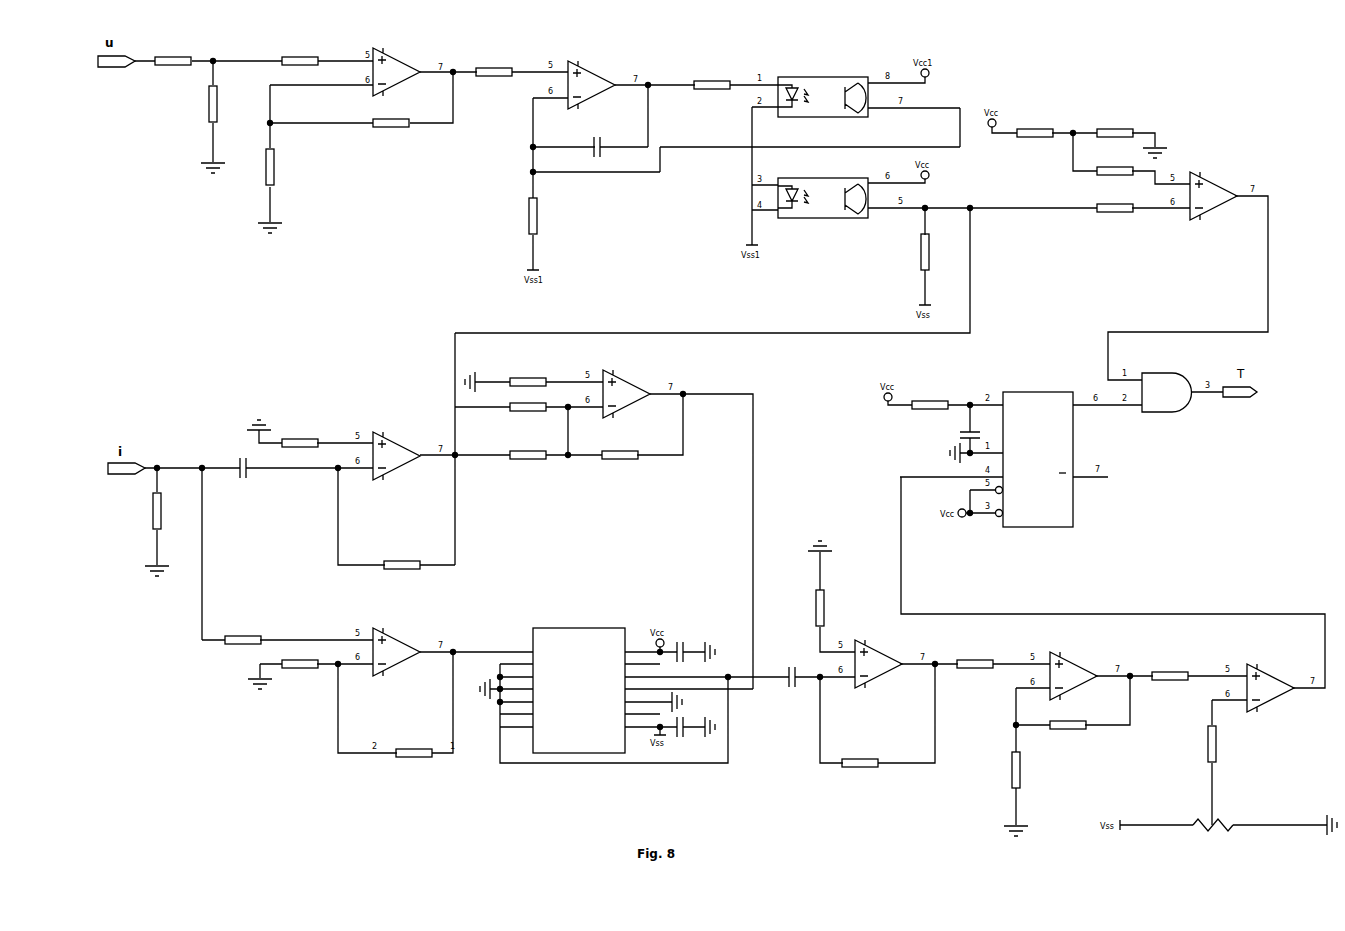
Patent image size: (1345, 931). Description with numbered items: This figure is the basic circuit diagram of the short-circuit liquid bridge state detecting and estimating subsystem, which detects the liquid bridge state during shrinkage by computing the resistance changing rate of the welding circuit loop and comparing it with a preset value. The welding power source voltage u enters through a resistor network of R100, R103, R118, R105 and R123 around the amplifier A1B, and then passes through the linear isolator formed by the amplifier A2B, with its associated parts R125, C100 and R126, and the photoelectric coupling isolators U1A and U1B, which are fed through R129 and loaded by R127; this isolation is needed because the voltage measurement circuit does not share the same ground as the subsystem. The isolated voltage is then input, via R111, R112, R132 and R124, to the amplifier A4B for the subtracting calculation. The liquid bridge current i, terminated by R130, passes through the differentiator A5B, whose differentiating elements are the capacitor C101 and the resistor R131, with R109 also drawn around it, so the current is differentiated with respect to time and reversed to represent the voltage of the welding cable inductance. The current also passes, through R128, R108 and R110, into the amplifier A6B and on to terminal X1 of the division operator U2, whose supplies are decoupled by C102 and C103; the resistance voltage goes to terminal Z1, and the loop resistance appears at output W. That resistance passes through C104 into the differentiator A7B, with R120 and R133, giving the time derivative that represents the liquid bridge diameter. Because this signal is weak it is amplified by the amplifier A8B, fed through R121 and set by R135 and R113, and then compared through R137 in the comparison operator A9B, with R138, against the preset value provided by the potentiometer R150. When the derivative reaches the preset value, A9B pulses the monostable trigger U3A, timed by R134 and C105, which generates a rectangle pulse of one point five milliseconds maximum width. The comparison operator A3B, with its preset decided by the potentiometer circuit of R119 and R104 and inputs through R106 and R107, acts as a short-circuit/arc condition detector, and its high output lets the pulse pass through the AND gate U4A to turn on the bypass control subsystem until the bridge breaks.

The resistor 27K R100 is at (173, 63).
The resistor 8.2K R103 is at (232, 104).
The resistor 4.7K R118 is at (300, 63).
The resistor 10K R105 is at (289, 167).
The resistor 20K R123 is at (391, 122).
The amplifier A1B is at (410, 64).
The resistor 220K R125 is at (494, 73).
The amplifier A2B is at (591, 88).
The capacitor 750P C100 is at (614, 149).
The resistor 4.3k R126 is at (552, 216).
The resistor 12K R129 is at (712, 86).
The photoelectric coupling isolator U1A is at (823, 96).
The photoelectric coupling isolator U1B is at (823, 198).
The resistor 4.3k R127 is at (944, 252).
The potentiometer circuit resistor R119 is at (1035, 134).
The potentiometer circuit resistor R104 is at (1115, 132).
The resistor 10K R106 is at (1115, 171).
The resistor 10K R107 is at (1115, 208).
The comparison operator A3B is at (1213, 198).
The resistor 150K R134 is at (930, 406).
The capacitor 10N C105 is at (983, 434).
The monostable trigger U3A is at (1035, 459).
The AND gate U4A is at (1167, 392).
The resistor 10K R111 is at (543, 374).
The resistor 10K R112 is at (528, 411).
The amplifier A4B is at (626, 398).
The resistor 120K R132 is at (528, 459).
The resistor 20K R124 is at (620, 459).
The resistor 27 R130 is at (173, 511).
The capacitor C101 is at (249, 466).
The resistor 10K R109 is at (300, 444).
The differentiator A5B is at (396, 460).
The resistor R131 is at (403, 566).
The resistor 4.3k R128 is at (243, 640).
The resistor 10K R108 is at (300, 667).
The amplifier A6B is at (396, 656).
The resistor 10K R110 is at (414, 756).
The division operator U2 is at (579, 690).
The capacitor 0.1u C102 is at (696, 652).
The capacitor 0.1u C103 is at (698, 729).
The capacitor 47N C104 is at (797, 697).
The resistor 4.7K R120 is at (836, 608).
The differentiator A7B is at (878, 668).
The resistor 18K R133 is at (860, 766).
The resistor 4.7K R121 is at (975, 668).
The amplifier A8B is at (1088, 668).
The resistor 22K R135 is at (1068, 726).
The resistor 10K R113 is at (1035, 770).
The resistor 2K R137 is at (1170, 679).
The comparison operator A9B is at (1270, 691).
The resistor 2K R138 is at (1230, 744).
The potentiometer R150 is at (1213, 839).